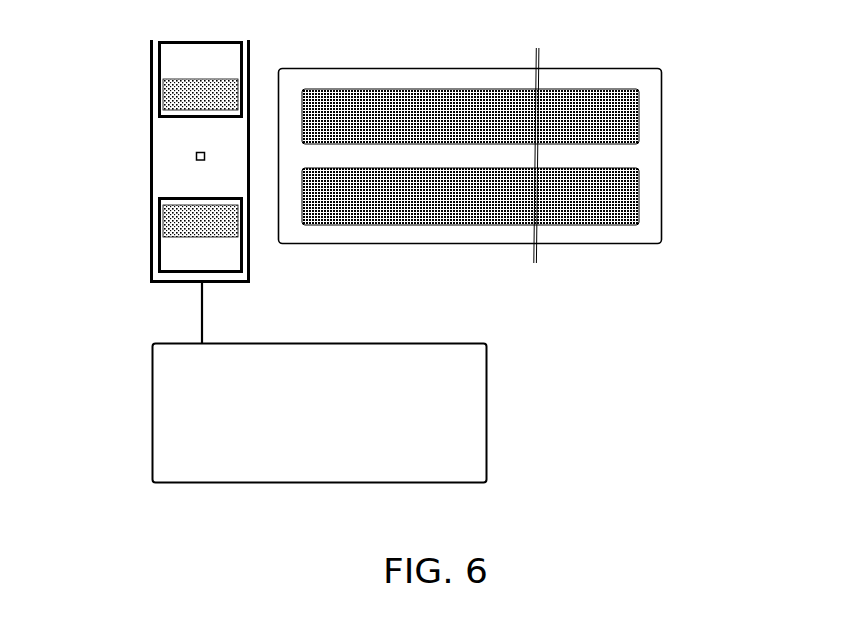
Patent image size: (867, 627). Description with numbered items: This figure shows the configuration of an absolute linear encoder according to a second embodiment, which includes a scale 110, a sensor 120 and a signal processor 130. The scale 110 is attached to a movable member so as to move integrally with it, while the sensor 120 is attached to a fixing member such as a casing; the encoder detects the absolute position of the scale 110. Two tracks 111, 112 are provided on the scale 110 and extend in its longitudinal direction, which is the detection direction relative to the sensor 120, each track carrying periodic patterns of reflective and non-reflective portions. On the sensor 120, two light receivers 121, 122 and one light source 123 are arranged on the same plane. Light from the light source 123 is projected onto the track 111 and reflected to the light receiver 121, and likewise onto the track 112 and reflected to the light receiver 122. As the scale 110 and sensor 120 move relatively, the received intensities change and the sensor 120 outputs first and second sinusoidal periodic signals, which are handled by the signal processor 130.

The scale 110 is at (653, 153).
The track 111 is at (636, 207).
The track 112 is at (636, 98).
The sensor 120 is at (156, 180).
The light receiver 121 is at (167, 256).
The light receiver 122 is at (165, 66).
The light source 123 is at (196, 156).
The signal processor 130 is at (190, 484).